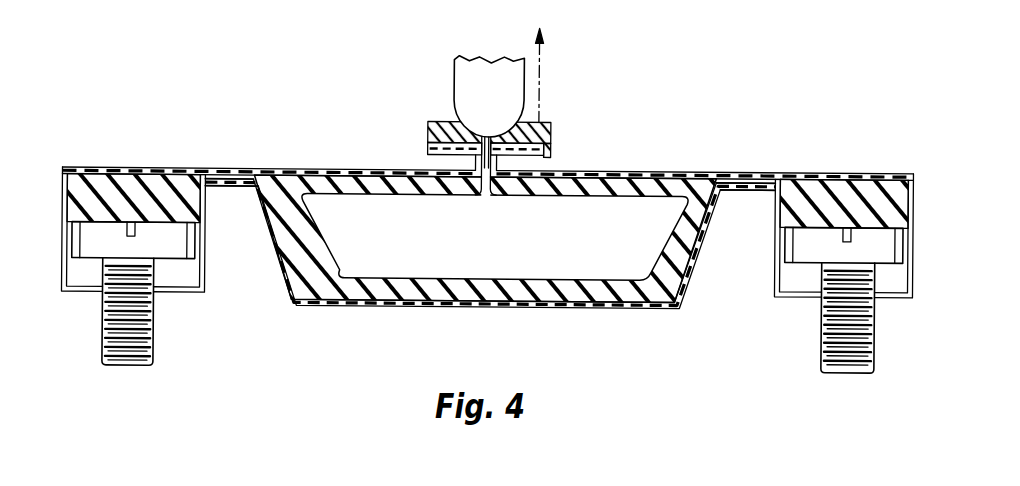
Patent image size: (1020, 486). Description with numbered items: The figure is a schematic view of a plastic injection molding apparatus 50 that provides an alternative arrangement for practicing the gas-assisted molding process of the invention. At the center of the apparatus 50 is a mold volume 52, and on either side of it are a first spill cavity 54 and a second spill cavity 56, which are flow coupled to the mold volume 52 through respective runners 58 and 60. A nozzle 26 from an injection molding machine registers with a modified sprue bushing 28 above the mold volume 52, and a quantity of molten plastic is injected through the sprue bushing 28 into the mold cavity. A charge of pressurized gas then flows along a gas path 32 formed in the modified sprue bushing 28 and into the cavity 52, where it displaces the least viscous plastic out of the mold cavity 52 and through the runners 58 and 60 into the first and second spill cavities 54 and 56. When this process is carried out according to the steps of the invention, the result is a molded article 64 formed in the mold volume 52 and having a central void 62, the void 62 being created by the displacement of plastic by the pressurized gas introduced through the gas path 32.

The nozzle 26 is at (452, 68).
The sprue bushing 28 is at (428, 123).
The gas path 32 is at (549, 130).
The plastic injection molding apparatus 50 is at (812, 98).
The mold volume 52 is at (632, 181).
The first spill cavity 54 is at (144, 181).
The second spill cavity 56 is at (813, 182).
The runner 58 is at (214, 181).
The runner 60 is at (747, 182).
The central void 62 is at (577, 199).
The molded article 64 is at (347, 176).